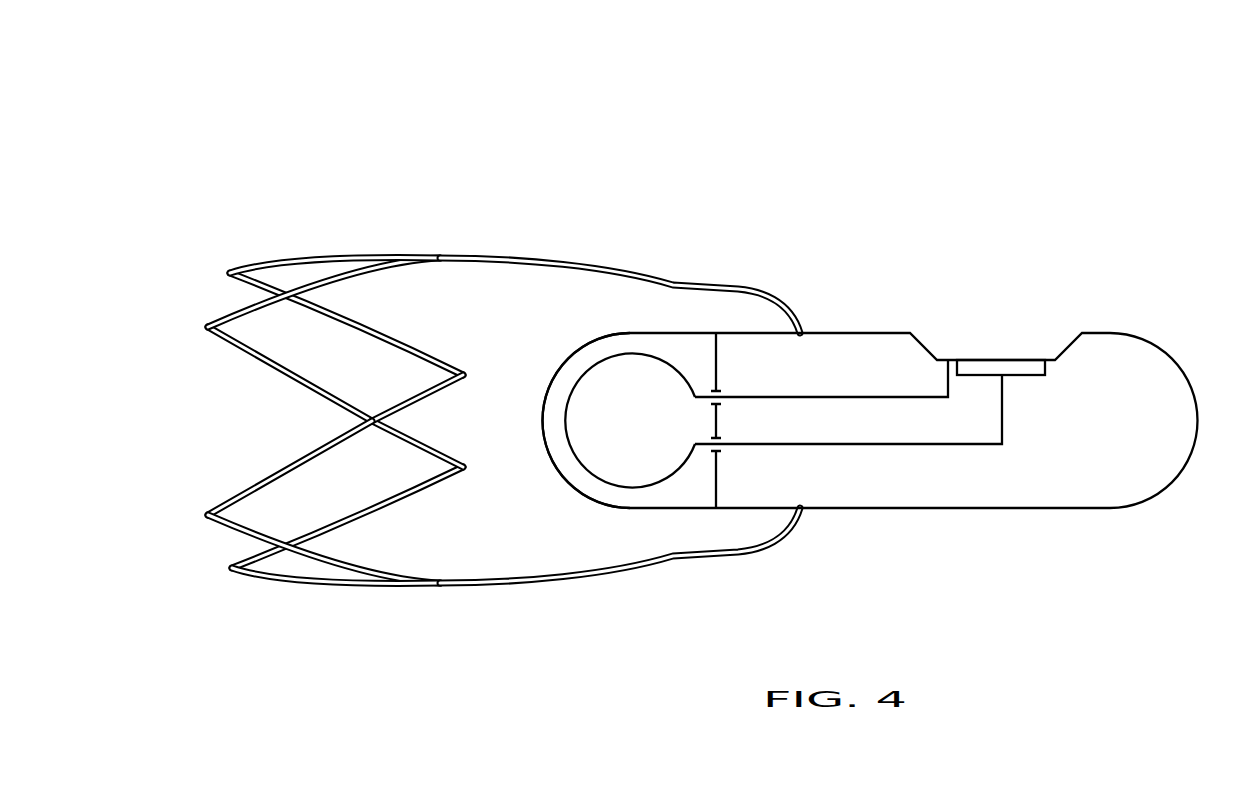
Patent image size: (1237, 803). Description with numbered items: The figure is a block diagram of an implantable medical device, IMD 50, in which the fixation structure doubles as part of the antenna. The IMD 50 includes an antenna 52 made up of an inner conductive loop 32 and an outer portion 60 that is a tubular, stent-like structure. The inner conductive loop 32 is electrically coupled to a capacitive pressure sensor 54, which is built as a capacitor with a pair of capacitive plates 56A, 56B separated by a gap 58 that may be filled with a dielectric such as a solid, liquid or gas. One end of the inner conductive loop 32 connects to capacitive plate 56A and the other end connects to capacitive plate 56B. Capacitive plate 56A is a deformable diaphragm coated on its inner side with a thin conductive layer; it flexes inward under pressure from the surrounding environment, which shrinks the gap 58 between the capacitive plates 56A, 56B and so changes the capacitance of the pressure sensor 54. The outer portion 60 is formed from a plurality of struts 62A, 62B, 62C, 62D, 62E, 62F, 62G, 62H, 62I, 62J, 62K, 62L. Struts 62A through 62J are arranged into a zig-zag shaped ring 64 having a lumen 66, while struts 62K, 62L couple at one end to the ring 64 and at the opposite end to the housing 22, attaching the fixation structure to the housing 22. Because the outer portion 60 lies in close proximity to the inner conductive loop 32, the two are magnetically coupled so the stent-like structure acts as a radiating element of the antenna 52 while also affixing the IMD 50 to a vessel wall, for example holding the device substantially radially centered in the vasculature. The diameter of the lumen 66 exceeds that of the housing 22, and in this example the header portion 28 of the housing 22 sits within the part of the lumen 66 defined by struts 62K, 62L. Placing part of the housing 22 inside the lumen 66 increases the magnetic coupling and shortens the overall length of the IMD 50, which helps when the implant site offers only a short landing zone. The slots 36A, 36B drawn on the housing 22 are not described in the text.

The IMD 50 is at (1074, 101).
The antenna 52 is at (742, 217).
The capacitive pressure sensor 54 is at (1022, 253).
The housing 22 is at (958, 509).
The header portion 28 is at (542, 421).
The inner conductive loop 32 is at (565, 431).
The first slot 36A is at (733, 361).
The second slot 36B is at (733, 480).
The capacitive plate 56A is at (997, 360).
The capacitive plate 56B is at (1025, 378).
The gap 58 is at (1008, 367).
The outer portion 60 is at (506, 226).
The strut 62A is at (312, 257).
The strut 62B is at (245, 313).
The strut 62C is at (373, 325).
The strut 62D is at (282, 370).
The strut 62E is at (391, 409).
The strut 62F is at (407, 437).
The strut 62G is at (268, 480).
The strut 62H is at (370, 508).
The strut 62I is at (357, 557).
The strut 62J is at (338, 584).
The strut 62K is at (580, 263).
The strut 62L is at (510, 585).
The ring 64 is at (262, 237).
The lumen 66 is at (193, 387).